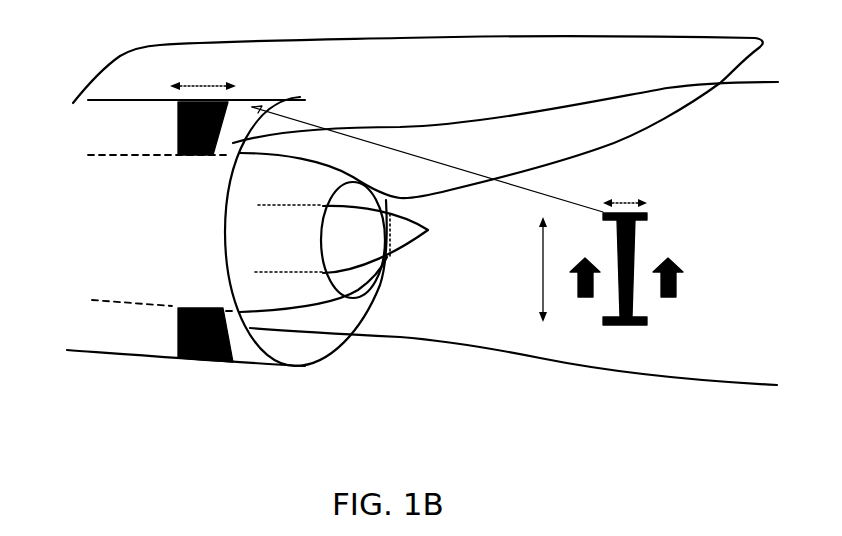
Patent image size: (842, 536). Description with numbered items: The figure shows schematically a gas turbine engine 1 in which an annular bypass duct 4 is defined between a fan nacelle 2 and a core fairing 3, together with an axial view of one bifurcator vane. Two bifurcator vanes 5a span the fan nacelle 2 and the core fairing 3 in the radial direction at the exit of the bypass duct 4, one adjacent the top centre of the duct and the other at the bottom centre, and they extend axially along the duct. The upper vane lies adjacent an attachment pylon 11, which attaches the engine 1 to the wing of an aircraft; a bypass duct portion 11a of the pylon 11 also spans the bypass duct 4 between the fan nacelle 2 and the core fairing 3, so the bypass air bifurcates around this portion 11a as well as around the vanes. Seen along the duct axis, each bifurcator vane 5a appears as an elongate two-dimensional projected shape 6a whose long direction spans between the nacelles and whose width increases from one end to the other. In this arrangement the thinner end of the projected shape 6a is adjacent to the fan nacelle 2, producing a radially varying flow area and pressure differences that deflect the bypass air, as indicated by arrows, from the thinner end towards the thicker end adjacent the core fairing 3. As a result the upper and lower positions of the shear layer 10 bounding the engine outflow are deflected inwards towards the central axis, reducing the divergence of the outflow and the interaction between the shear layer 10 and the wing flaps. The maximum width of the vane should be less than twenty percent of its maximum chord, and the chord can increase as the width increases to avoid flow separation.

The gas turbine engine 1 is at (146, 388).
The fan nacelle 2 is at (103, 352).
The core fairing 3 is at (323, 312).
The annular bypass duct 4 is at (302, 363).
The bifurcator vane 5a is at (173, 117).
The projected shape 6a is at (669, 246).
The shear layer 10 is at (655, 95).
The attachment pylon 11 is at (562, 84).
The bypass duct portion of the pylon 11a is at (116, 122).